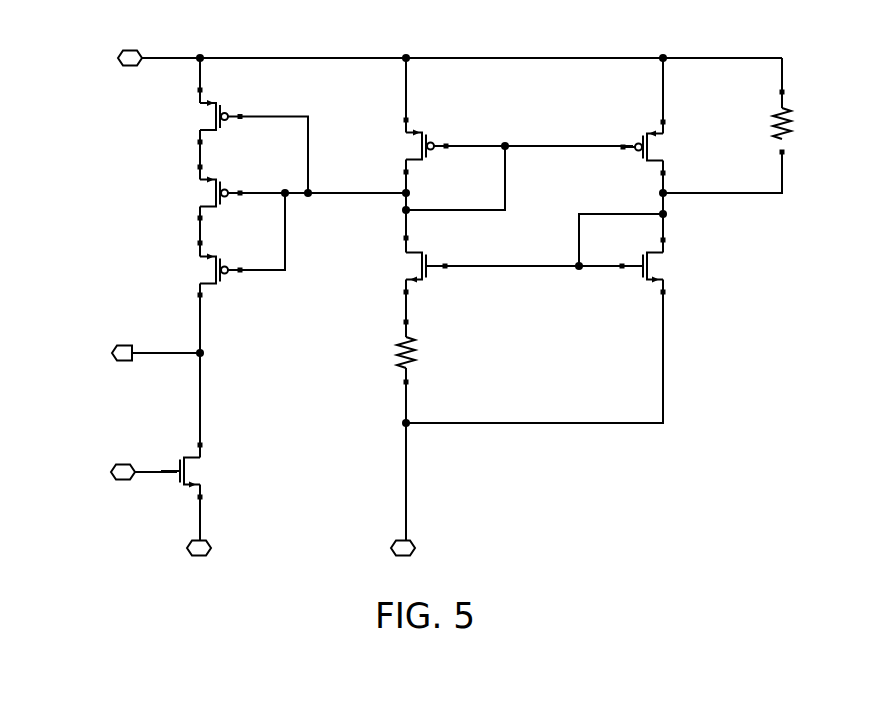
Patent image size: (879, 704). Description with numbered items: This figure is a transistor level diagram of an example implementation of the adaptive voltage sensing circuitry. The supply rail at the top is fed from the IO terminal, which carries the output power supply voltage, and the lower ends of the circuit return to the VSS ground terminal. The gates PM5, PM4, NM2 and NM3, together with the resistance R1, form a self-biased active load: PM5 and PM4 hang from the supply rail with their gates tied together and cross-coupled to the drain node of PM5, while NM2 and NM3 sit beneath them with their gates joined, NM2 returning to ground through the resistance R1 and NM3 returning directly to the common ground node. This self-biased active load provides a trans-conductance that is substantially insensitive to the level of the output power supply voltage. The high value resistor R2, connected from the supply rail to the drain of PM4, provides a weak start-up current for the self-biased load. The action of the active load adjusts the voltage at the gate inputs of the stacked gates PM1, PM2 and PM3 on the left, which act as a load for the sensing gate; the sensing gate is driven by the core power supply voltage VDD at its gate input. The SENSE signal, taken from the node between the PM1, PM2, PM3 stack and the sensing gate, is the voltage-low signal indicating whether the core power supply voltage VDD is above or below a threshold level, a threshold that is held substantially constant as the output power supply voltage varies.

The gate PM1 is at (191, 116).
The gate PM2 is at (191, 193).
The gate PM3 is at (191, 270).
The gate PM4 is at (670, 146).
The gate PM5 is at (394, 146).
The gate NM2 is at (393, 267).
The gate NM3 is at (670, 267).
The resistance R1 is at (426, 354).
The resistor R2 is at (802, 122).
The IO terminal IO is at (130, 40).
The core power supply voltage Vdd VDD is at (137, 257).
The SENSE signal SENSE is at (80, 354).
The VSS ground terminal VSS is at (327, 549).